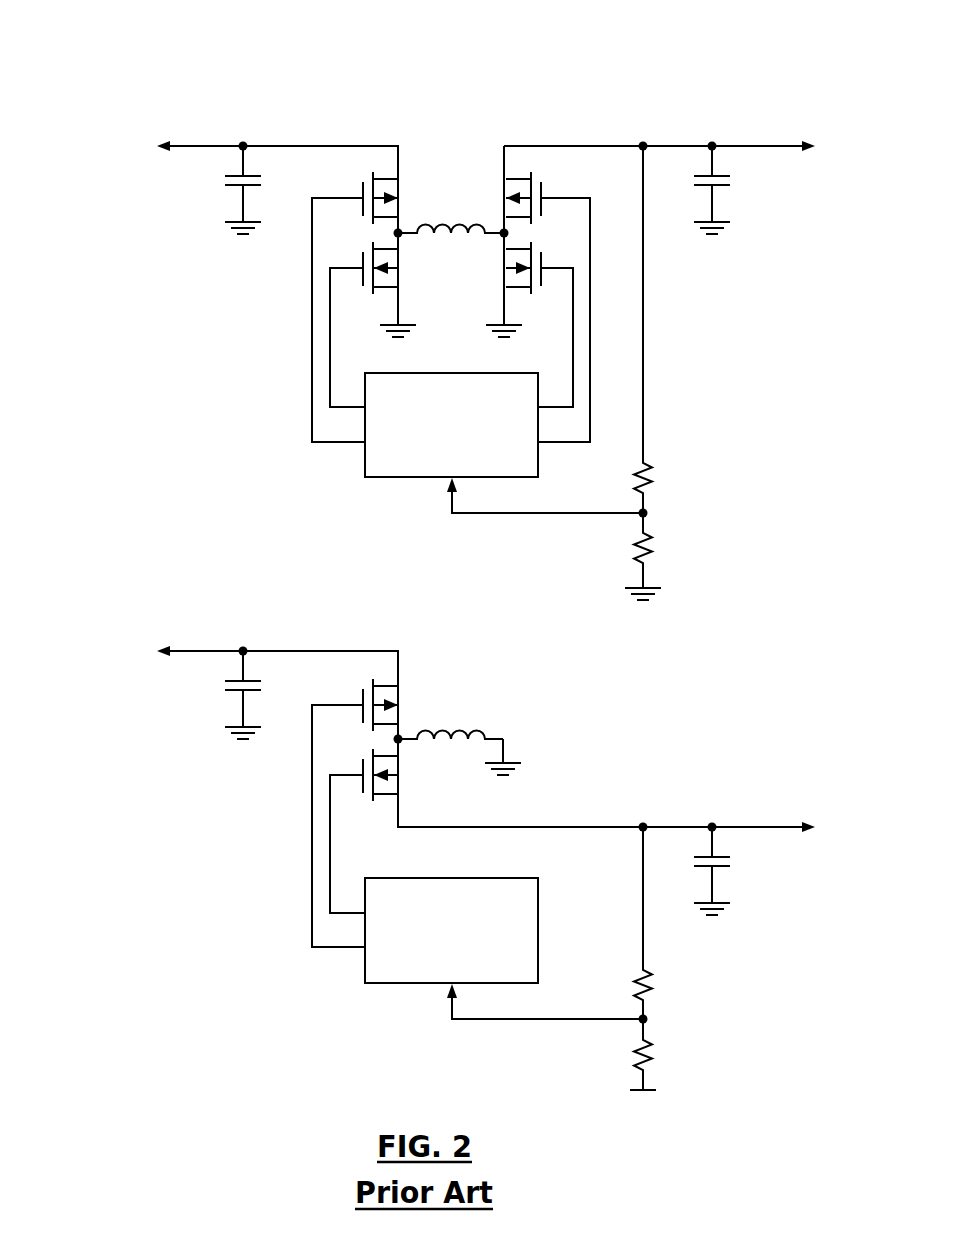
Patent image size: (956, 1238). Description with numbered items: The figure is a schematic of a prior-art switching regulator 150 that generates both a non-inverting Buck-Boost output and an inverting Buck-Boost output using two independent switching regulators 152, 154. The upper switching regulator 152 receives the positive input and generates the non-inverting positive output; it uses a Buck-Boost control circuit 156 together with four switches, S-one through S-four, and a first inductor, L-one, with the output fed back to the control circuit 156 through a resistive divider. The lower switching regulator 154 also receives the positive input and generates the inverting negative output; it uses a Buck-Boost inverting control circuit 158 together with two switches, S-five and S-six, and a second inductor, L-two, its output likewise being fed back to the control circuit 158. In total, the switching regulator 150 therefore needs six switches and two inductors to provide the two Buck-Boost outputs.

The switching regulator 150 is at (466, 74).
The switching regulator 152 is at (118, 109).
The switching regulator 154 is at (118, 614).
The Buck-Boost control circuit 156 is at (397, 477).
The Buck-Boost inverting control circuit 158 is at (397, 983).